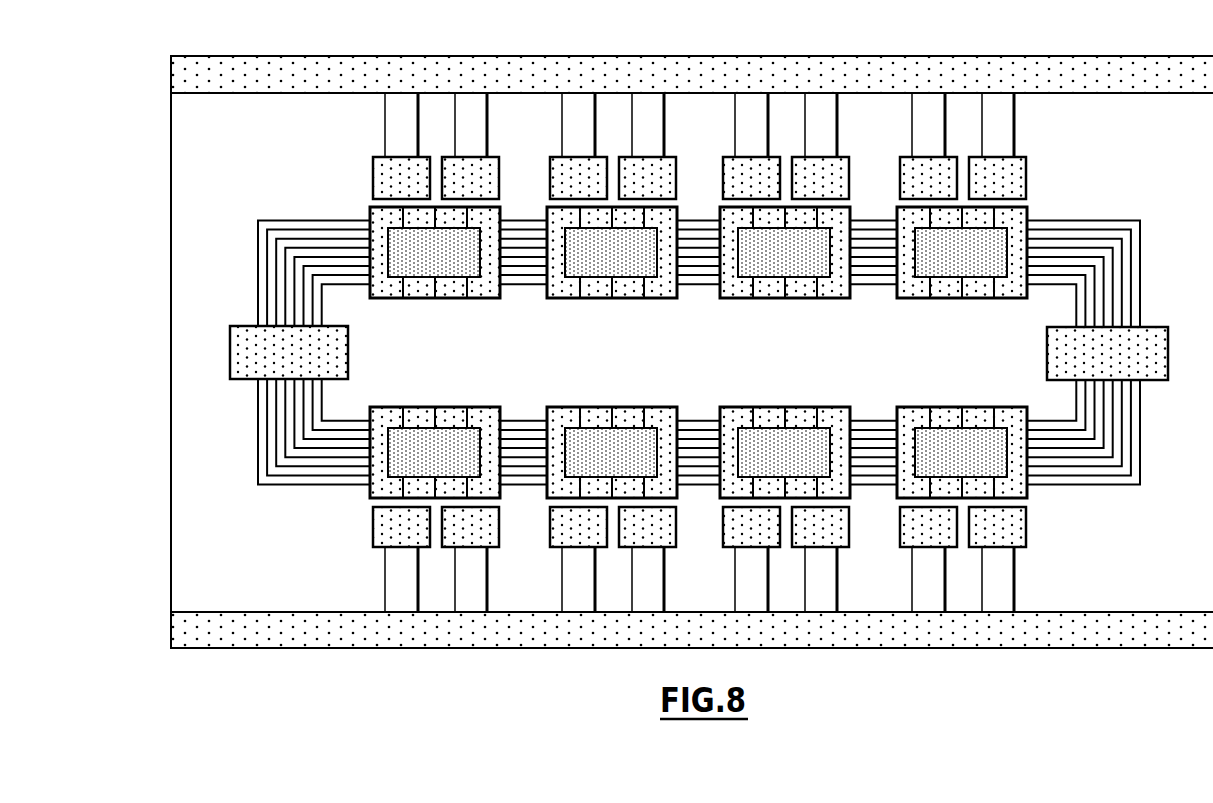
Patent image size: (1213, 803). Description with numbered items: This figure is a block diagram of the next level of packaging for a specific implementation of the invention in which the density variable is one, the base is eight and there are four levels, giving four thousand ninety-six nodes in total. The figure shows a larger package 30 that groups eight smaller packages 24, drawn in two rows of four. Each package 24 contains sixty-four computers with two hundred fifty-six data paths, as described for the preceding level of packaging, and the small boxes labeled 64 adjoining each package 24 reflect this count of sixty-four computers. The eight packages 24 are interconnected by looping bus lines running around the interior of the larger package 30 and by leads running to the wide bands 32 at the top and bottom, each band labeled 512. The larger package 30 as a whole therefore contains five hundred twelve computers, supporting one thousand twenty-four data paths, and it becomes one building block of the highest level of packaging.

The larger package 30 is at (170, 185).
The data bus 32 is at (425, 56).
The package 24 is at (698, 352).
The 64-bit data register 64 is at (699, 352).
The 512-bit bus 512 is at (701, 353).